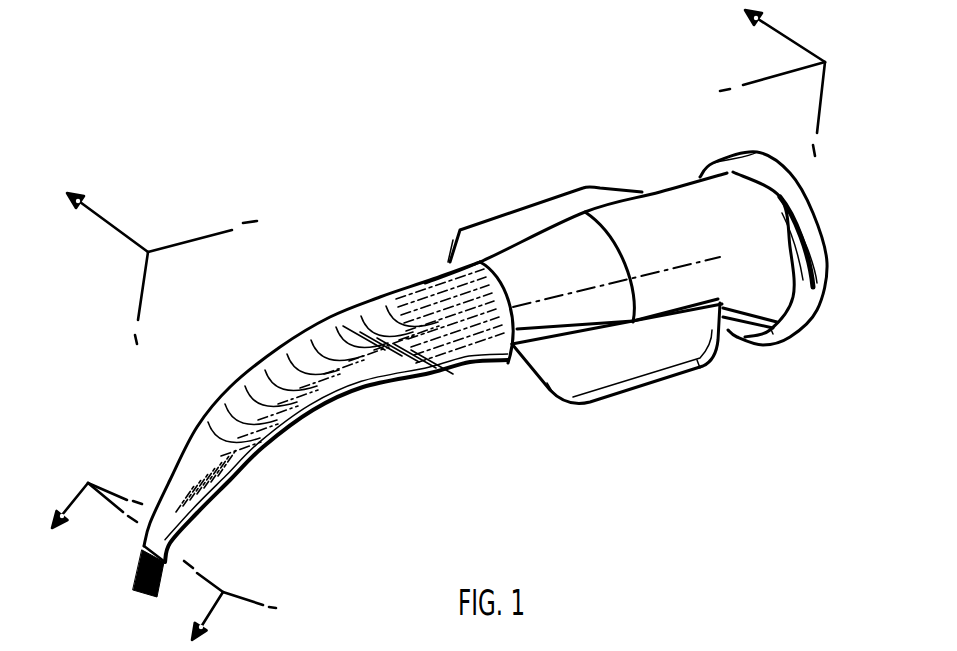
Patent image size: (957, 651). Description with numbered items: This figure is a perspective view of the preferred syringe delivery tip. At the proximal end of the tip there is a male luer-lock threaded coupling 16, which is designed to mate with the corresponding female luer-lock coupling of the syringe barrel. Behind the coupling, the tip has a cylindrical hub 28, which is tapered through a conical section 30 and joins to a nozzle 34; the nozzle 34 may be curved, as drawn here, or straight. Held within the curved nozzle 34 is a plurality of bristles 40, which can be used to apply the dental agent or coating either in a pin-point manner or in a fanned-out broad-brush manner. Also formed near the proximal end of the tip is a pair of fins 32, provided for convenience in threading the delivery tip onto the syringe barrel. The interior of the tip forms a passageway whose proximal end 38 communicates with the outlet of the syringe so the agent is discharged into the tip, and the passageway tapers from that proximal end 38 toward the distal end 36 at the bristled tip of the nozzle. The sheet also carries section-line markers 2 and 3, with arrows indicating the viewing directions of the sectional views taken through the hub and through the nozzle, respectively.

The section line 2- 2 is at (457, 177).
The section line 3- 3 is at (164, 546).
The male luer-lock threaded coupling 16 is at (790, 181).
The cylindrical hub 28 is at (635, 217).
The conical section 30 is at (548, 257).
The fins 32 is at (487, 233).
The nozzle 34 is at (358, 392).
The distal end 36 is at (140, 553).
The proximal end 38 is at (822, 262).
The bristles 40 is at (132, 582).